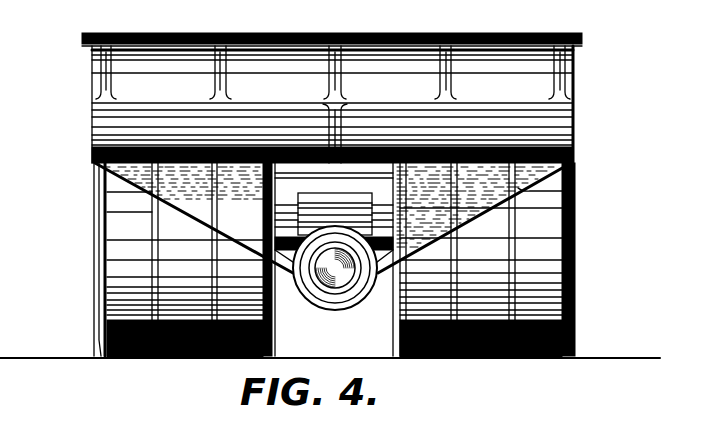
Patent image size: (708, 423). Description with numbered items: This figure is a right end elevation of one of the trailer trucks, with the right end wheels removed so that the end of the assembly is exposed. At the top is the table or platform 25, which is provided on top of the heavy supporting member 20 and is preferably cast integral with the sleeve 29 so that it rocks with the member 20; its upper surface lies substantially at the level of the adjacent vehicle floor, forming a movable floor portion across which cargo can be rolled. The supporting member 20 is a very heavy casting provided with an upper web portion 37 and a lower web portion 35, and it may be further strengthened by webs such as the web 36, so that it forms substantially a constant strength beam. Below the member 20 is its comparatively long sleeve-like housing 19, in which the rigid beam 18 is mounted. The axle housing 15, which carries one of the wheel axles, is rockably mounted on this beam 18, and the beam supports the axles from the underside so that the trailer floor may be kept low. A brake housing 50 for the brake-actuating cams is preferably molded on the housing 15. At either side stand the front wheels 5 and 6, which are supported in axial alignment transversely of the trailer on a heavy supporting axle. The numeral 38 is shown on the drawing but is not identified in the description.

The table or platform 25 is at (338, 35).
The supporting member 20 is at (575, 84).
The sleeve 29 is at (125, 103).
The upper web portion 37 is at (452, 80).
The lower web portion 35 is at (345, 110).
The front wheel 5 is at (100, 331).
The web 36 is at (168, 205).
The front wheel 6 is at (576, 340).
The brace 38 is at (577, 192).
The housing 15 is at (275, 181).
The housing 50 is at (298, 198).
The sleeve-like housing 19 is at (324, 303).
The rigid beam 18 is at (347, 284).